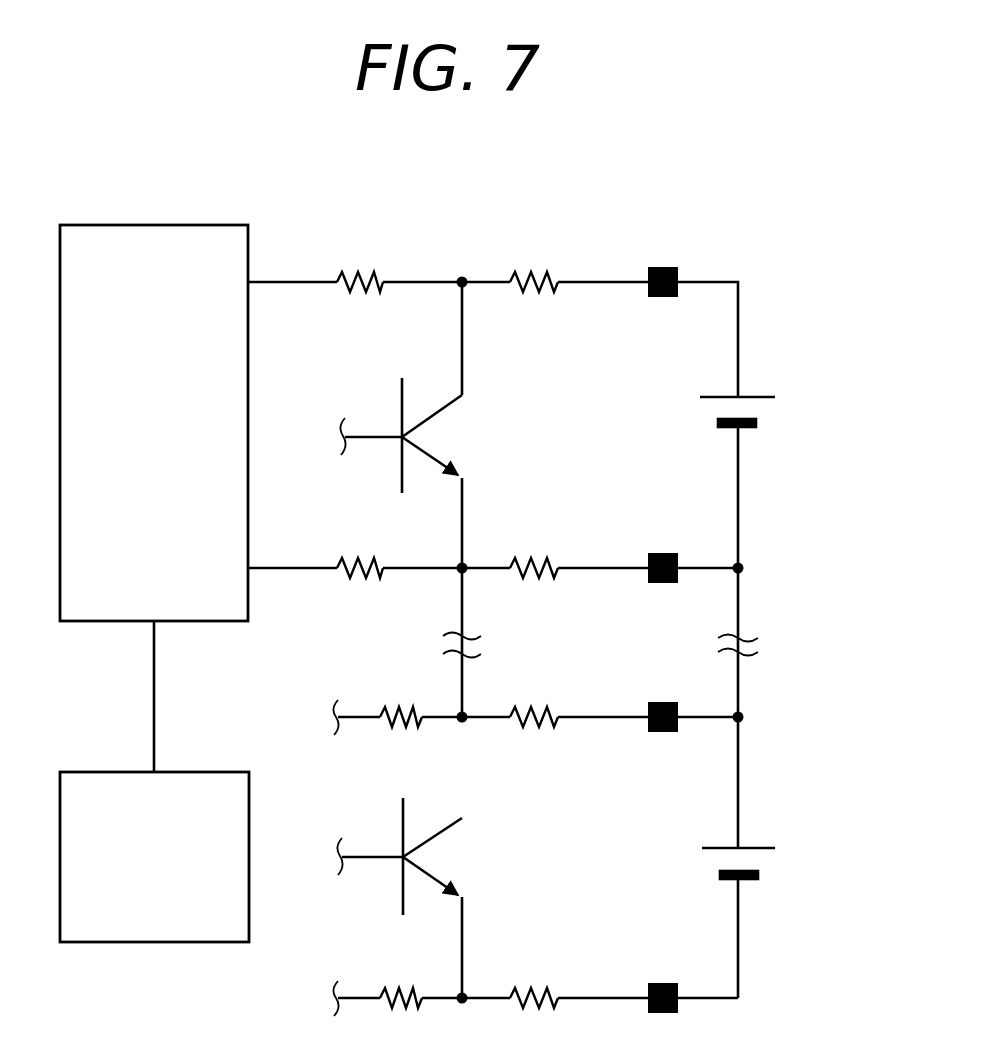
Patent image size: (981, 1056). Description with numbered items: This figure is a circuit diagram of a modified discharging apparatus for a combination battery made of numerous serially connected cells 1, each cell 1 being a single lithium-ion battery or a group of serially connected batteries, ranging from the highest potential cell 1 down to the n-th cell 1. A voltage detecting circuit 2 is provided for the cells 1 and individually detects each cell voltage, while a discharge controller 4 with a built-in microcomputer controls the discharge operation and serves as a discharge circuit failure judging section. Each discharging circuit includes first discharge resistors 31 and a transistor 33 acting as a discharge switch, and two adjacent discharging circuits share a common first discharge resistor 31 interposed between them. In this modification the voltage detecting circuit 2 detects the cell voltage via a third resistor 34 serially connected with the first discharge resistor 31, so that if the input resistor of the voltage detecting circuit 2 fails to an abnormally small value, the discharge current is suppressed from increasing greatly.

The cell 1 is at (752, 846).
The voltage detecting circuit 2 is at (249, 371).
The discharge controller 4 is at (249, 830).
The first discharge resistor 31 is at (538, 274).
The transistor 33 is at (401, 399).
The third resistor 34 is at (365, 274).